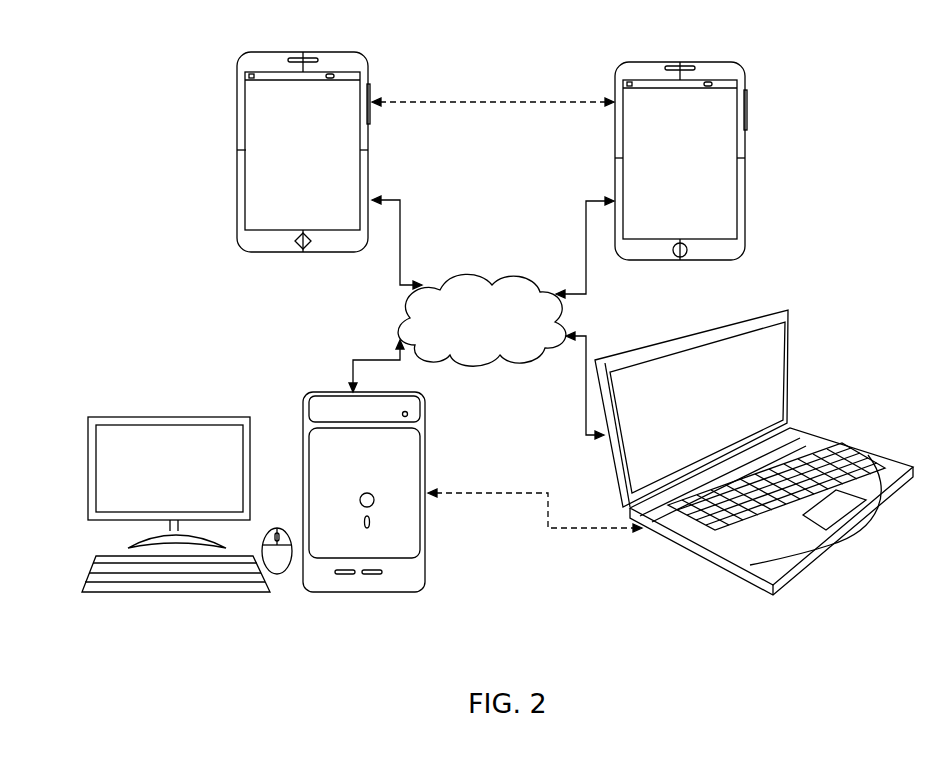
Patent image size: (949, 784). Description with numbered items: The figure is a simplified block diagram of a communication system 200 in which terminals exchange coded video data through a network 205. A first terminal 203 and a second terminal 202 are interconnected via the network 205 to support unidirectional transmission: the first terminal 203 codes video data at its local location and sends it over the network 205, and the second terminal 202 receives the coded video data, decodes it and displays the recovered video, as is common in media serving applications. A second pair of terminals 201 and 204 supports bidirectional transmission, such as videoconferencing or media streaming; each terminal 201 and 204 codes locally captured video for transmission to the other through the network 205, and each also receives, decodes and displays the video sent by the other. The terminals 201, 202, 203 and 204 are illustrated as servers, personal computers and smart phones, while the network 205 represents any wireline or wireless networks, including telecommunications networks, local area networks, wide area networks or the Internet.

The communication system 200 is at (113, 36).
The terminal 201 is at (233, 138).
The second terminal 202 is at (423, 563).
The first terminal 203 is at (612, 452).
The terminal 204 is at (613, 135).
The network 205 is at (485, 273).